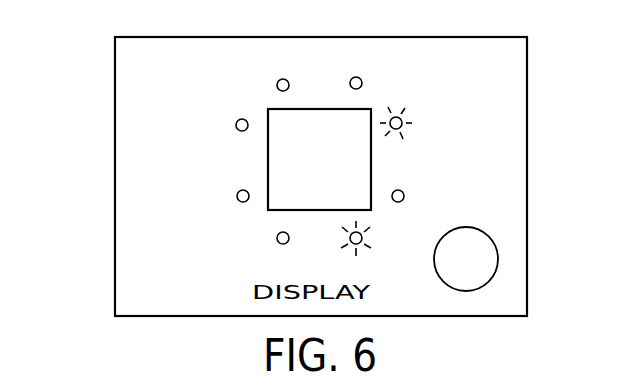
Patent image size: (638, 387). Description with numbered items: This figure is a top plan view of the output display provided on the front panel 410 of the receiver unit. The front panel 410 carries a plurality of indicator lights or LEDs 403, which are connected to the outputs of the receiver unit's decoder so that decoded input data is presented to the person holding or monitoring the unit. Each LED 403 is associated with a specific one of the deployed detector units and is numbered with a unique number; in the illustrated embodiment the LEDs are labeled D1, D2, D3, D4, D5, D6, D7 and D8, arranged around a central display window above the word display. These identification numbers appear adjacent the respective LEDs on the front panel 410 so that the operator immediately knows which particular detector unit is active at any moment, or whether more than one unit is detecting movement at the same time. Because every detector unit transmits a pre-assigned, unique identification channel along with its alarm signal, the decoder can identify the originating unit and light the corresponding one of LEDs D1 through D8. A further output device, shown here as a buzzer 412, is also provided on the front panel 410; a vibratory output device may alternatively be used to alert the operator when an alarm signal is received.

The front panel 410 is at (114, 131).
The buzzer 412 is at (493, 240).
The indicator lights or LEDs 403 is at (228, 142).
The LED D1 is at (362, 72).
The LED D2 is at (415, 123).
The LED D3 is at (417, 198).
The LED D4 is at (376, 238).
The LED D5 is at (279, 252).
The LED D6 is at (237, 209).
The LED D7 is at (244, 137).
The LED D8 is at (285, 73).